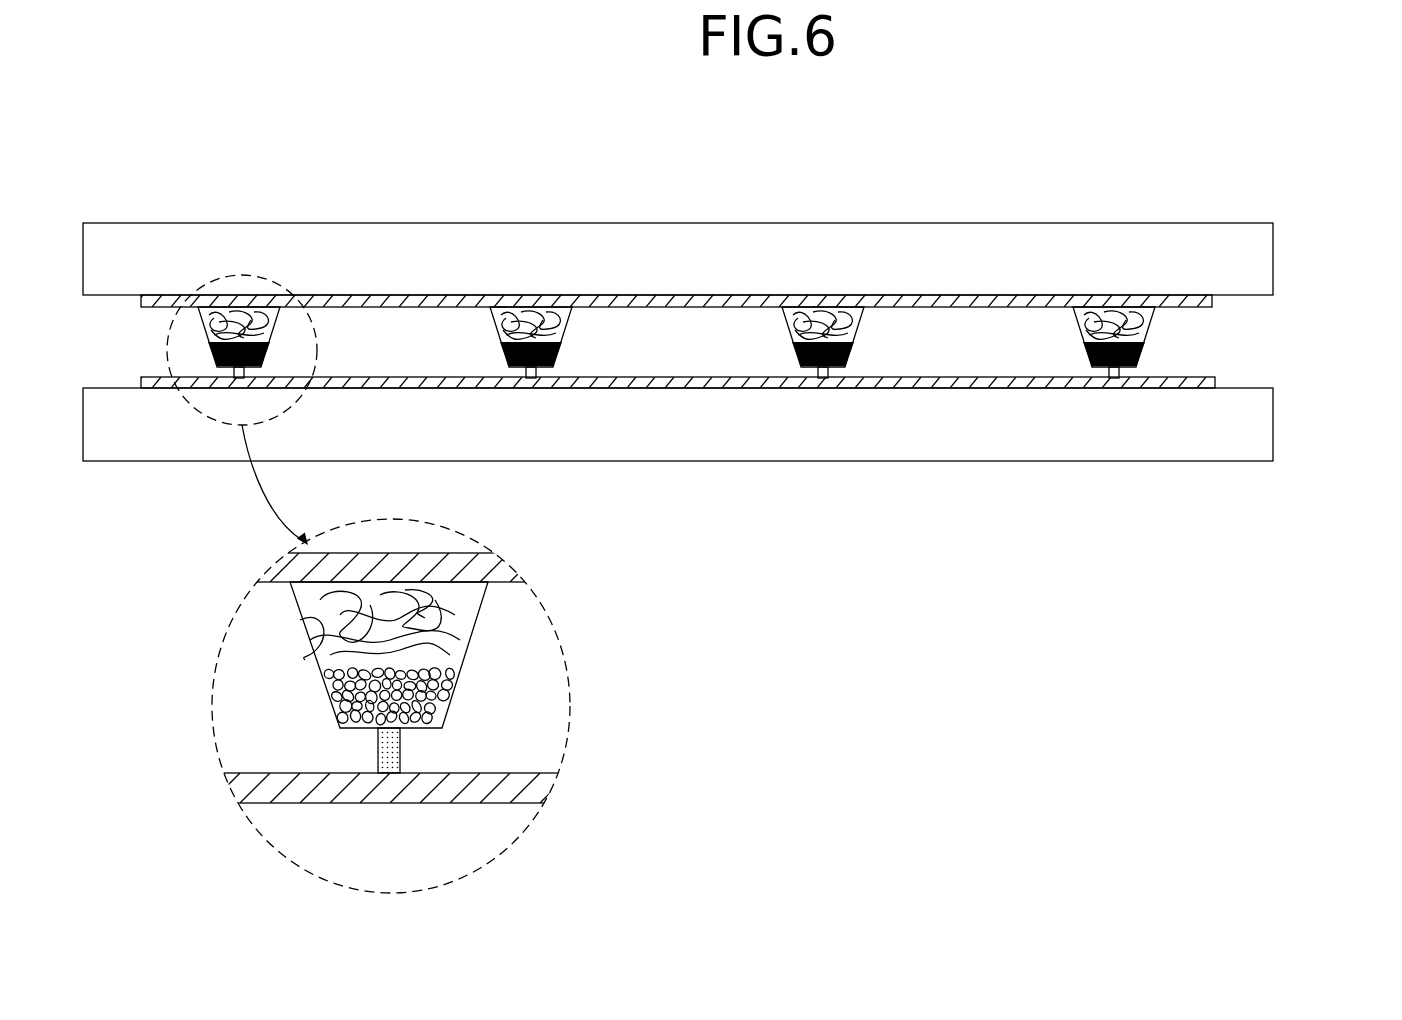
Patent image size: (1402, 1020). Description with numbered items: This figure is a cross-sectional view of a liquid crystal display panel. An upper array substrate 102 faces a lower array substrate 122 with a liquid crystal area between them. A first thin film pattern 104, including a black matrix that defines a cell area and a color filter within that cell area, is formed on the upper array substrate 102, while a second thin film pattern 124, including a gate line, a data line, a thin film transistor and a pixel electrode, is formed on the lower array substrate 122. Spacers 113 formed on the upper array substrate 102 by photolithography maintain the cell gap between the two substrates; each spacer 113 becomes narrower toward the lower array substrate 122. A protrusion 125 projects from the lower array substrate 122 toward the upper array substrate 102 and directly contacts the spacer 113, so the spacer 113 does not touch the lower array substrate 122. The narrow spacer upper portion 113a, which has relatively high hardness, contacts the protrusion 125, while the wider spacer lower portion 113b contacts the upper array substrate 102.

The upper array substrate 102 is at (1290, 213).
The first thin film pattern 104 is at (1210, 299).
The spacer 113 is at (518, 307).
The spacer upper portion 113a is at (312, 675).
The spacer lower portion 113b is at (287, 598).
The lower array substrate 122 is at (1298, 422).
The second thin film pattern 124 is at (1115, 388).
The protrusion 125 is at (825, 388).